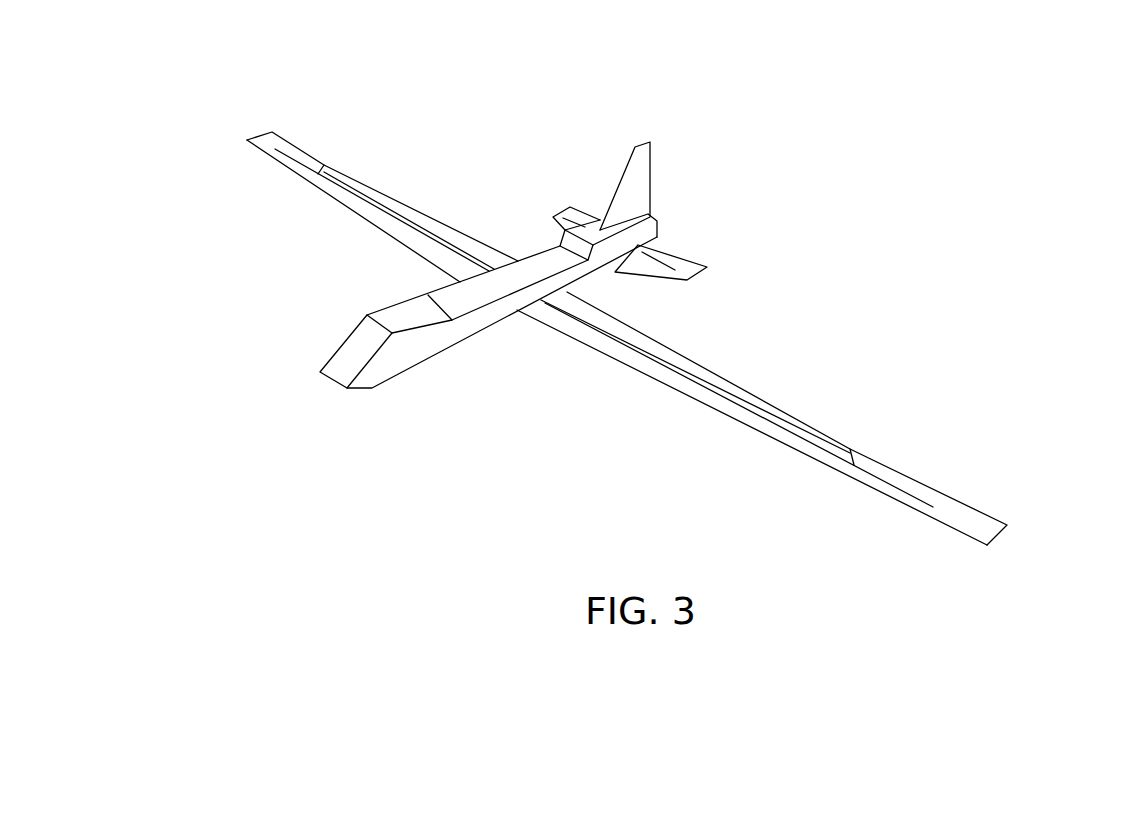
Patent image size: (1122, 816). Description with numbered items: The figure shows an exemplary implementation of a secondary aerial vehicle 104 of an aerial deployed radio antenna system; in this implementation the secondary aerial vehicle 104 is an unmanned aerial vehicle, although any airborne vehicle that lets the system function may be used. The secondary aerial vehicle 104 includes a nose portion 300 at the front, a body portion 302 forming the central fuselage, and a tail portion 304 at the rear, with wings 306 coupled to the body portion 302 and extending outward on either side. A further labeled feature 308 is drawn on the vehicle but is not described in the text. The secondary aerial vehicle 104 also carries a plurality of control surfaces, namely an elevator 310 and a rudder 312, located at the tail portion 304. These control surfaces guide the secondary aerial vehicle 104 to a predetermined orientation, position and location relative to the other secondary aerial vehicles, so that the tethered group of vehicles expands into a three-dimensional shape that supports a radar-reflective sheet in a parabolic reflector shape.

The secondary aerial vehicle 104 is at (623, 279).
The nose portion 300 is at (623, 290).
The body portion 302 is at (530, 380).
The tail portion 304 is at (634, 140).
The wings 306 is at (255, 140).
The nose section 308 is at (480, 362).
The elevator 310 is at (370, 177).
The rudder 312 is at (648, 173).